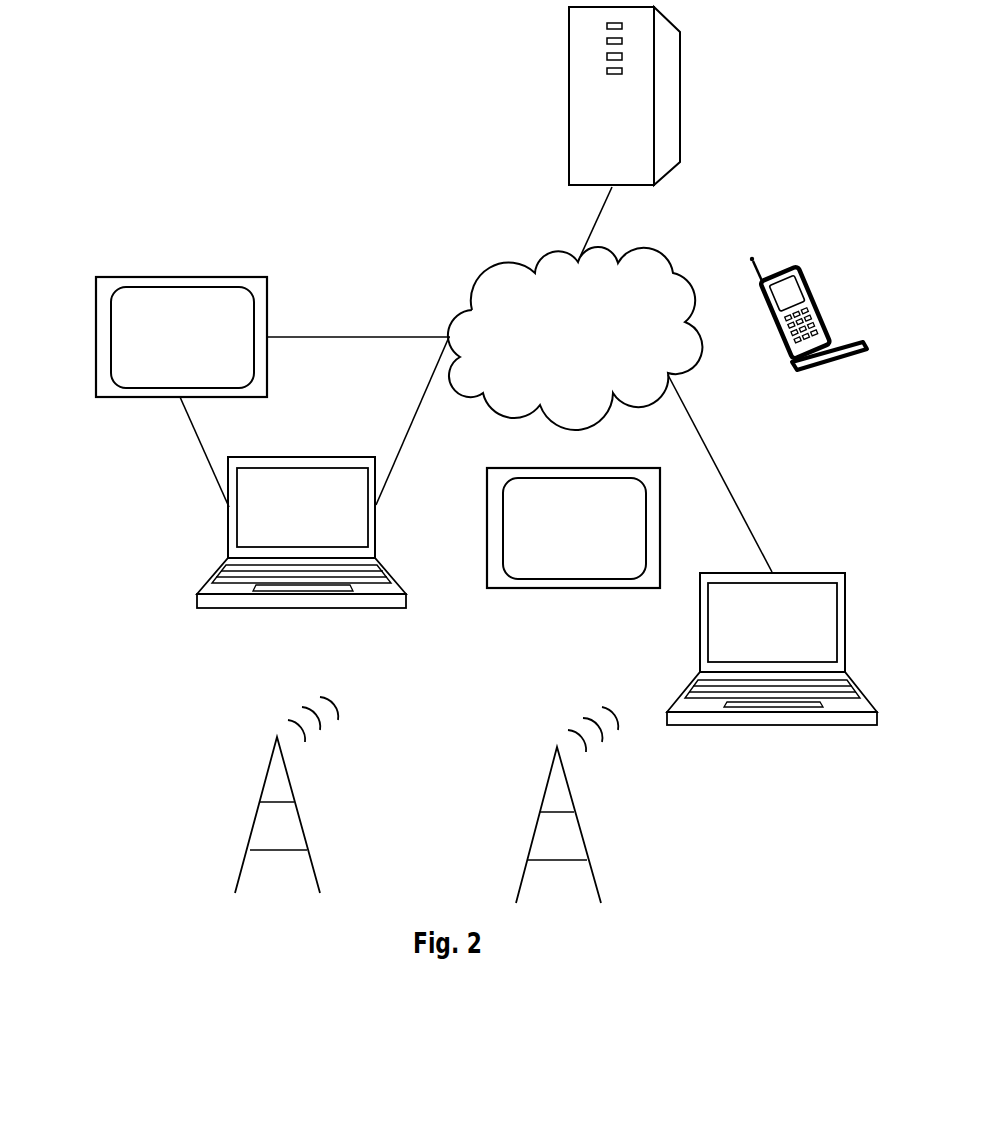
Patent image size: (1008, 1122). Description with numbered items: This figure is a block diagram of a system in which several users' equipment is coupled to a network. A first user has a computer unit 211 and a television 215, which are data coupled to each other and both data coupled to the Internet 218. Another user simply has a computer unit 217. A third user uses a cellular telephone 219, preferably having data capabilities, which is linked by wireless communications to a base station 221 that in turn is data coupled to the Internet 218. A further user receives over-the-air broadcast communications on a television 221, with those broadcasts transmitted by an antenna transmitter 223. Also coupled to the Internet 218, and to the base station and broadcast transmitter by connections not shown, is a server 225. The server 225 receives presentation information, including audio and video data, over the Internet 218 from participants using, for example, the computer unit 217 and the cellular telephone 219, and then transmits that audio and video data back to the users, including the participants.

The computer unit 211 is at (297, 610).
The television 215 is at (102, 320).
The computer unit 217 is at (700, 643).
The Internet 218 is at (476, 282).
The cellular telephone 219 is at (778, 343).
The base station / television 221 is at (558, 588).
The antenna transmitter 223 is at (298, 816).
The server 225 is at (678, 118).